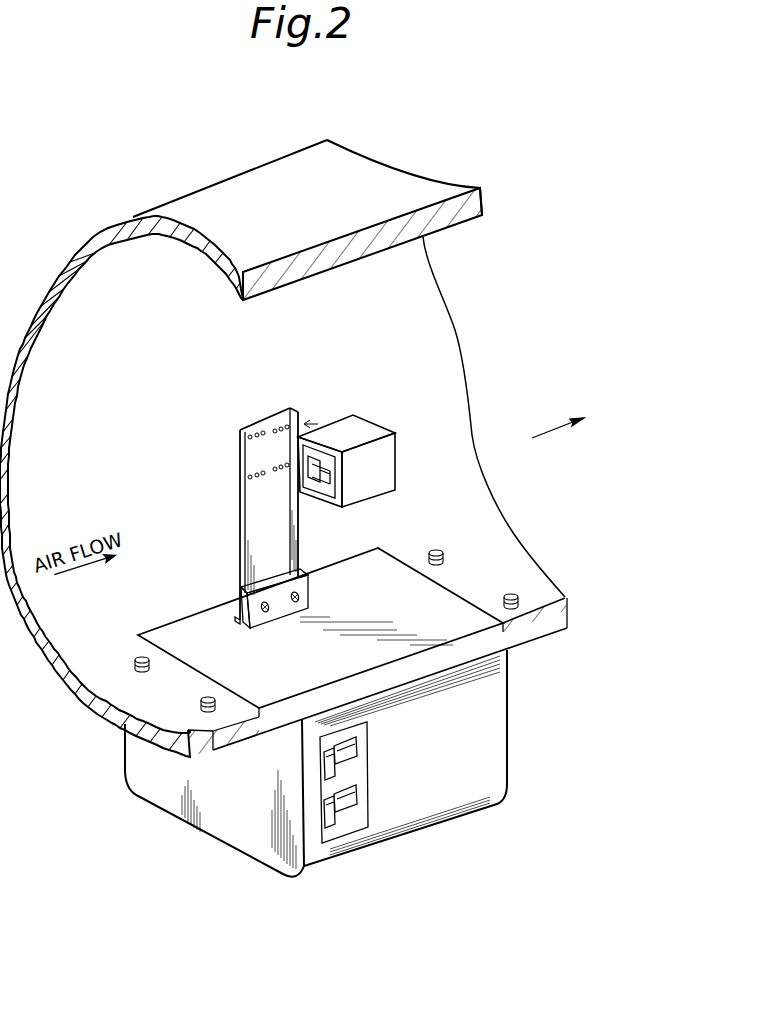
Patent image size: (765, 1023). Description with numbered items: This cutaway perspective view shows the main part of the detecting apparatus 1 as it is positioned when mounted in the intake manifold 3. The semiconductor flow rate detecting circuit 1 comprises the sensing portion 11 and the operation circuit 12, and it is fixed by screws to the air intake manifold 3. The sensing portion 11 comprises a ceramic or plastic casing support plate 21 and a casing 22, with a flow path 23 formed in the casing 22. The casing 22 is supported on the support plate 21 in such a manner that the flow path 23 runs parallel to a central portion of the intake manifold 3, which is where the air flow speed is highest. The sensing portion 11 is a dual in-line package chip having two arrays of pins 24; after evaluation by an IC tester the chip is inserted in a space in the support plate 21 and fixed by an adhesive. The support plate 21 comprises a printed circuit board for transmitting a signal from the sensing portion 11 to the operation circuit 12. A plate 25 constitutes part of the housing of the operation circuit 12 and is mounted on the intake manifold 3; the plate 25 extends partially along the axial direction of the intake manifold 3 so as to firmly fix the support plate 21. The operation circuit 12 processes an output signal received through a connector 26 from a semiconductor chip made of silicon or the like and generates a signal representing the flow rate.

The detecting apparatus 1 is at (343, 767).
The intake manifold 3 is at (437, 220).
The sensing portion 11 is at (381, 467).
The operation circuit 12 is at (490, 698).
The support plate 21 is at (287, 550).
The casing 22 is at (363, 423).
The flow path 23 is at (306, 452).
The pins 24 is at (302, 448).
The plate 25 is at (450, 608).
The connector 26 is at (348, 800).